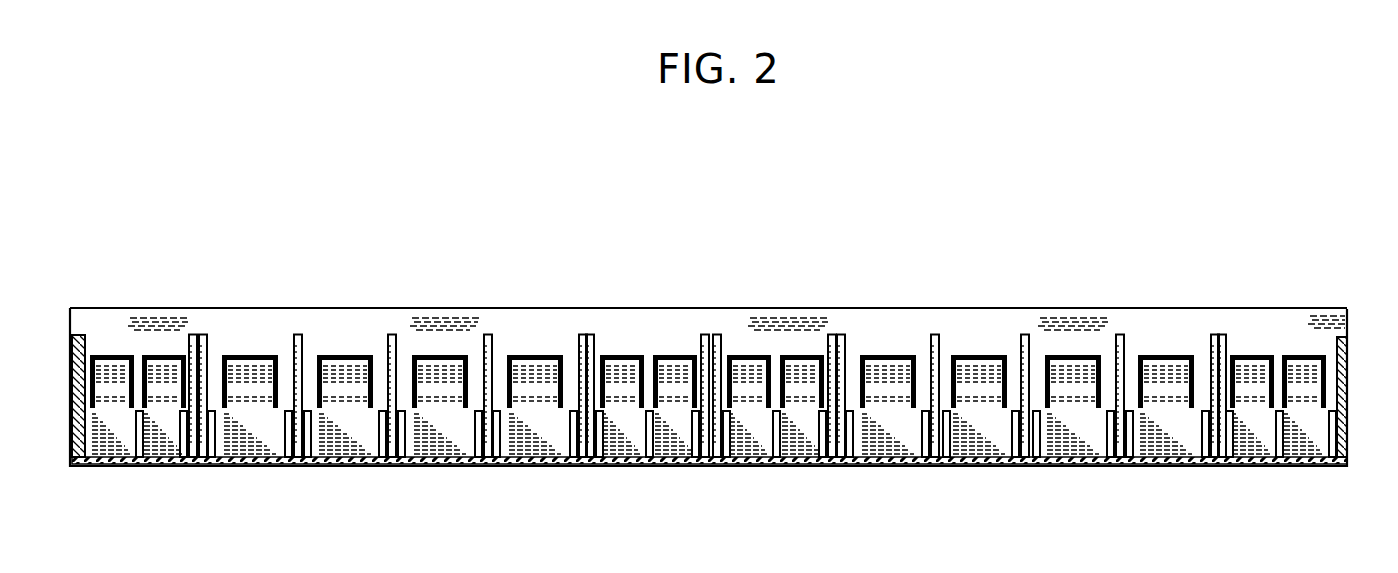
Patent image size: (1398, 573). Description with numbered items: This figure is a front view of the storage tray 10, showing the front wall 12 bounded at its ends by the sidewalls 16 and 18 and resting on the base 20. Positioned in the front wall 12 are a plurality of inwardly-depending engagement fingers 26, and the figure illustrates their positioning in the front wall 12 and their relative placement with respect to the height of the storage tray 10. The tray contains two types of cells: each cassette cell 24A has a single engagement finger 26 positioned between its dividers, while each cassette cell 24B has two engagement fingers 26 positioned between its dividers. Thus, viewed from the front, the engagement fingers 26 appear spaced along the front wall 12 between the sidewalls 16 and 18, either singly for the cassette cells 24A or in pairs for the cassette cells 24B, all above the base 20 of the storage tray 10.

The storage tray 10 is at (718, 196).
The front wall 12 is at (1100, 312).
The sidewall 16 is at (72, 372).
The sidewall 18 is at (1345, 389).
The base 20 is at (875, 465).
The cassette cell 24A is at (450, 323).
The cassette cell 24B is at (646, 325).
The engagement finger 26 is at (117, 383).